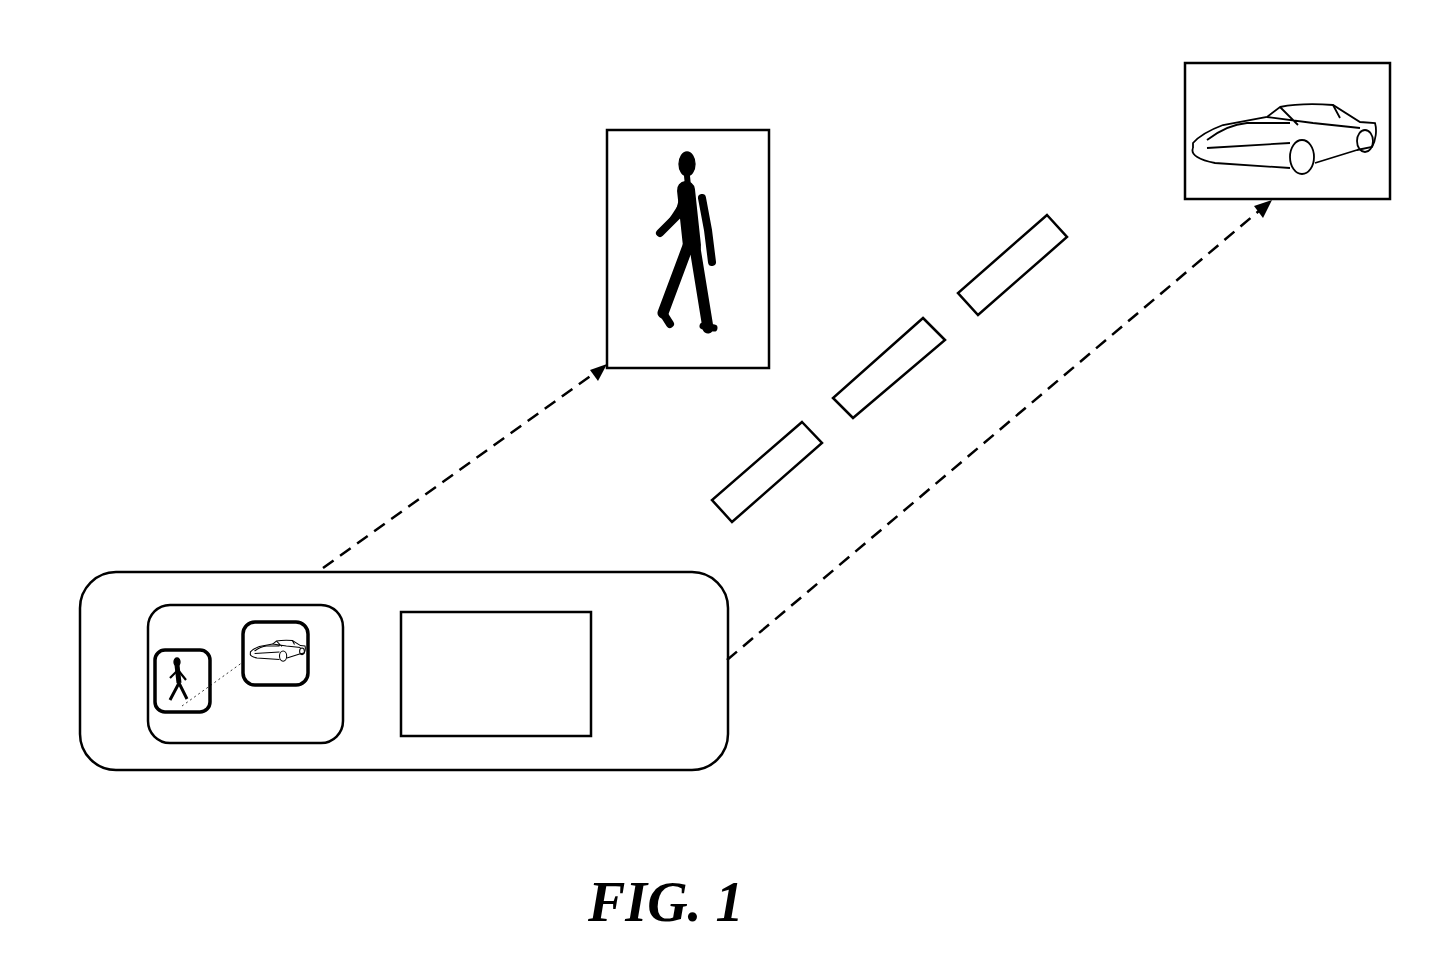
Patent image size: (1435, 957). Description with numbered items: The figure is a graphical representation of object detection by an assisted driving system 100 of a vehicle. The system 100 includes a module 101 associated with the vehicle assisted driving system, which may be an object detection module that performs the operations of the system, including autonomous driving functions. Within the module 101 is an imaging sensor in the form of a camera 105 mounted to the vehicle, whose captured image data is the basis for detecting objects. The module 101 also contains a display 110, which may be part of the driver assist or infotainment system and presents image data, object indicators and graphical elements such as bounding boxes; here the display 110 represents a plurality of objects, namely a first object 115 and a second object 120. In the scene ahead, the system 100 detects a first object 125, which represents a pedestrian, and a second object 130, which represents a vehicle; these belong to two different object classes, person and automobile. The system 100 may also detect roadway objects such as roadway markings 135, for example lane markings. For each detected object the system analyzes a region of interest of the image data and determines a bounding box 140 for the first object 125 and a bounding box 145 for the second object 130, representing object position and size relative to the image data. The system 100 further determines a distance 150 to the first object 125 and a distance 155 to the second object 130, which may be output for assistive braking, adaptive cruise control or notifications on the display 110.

The system 100 is at (188, 546).
The module 101 is at (727, 594).
The camera 105 is at (537, 612).
The display 110 is at (340, 612).
The first object 115 is at (177, 710).
The second object 120 is at (290, 687).
The first object 125 is at (686, 152).
The second object 130 is at (1292, 103).
The roadway markings 135 is at (968, 280).
The bounding box 140 is at (603, 223).
The bounding box 145 is at (1204, 66).
The distance 150 is at (525, 418).
The distance 155 is at (1003, 428).